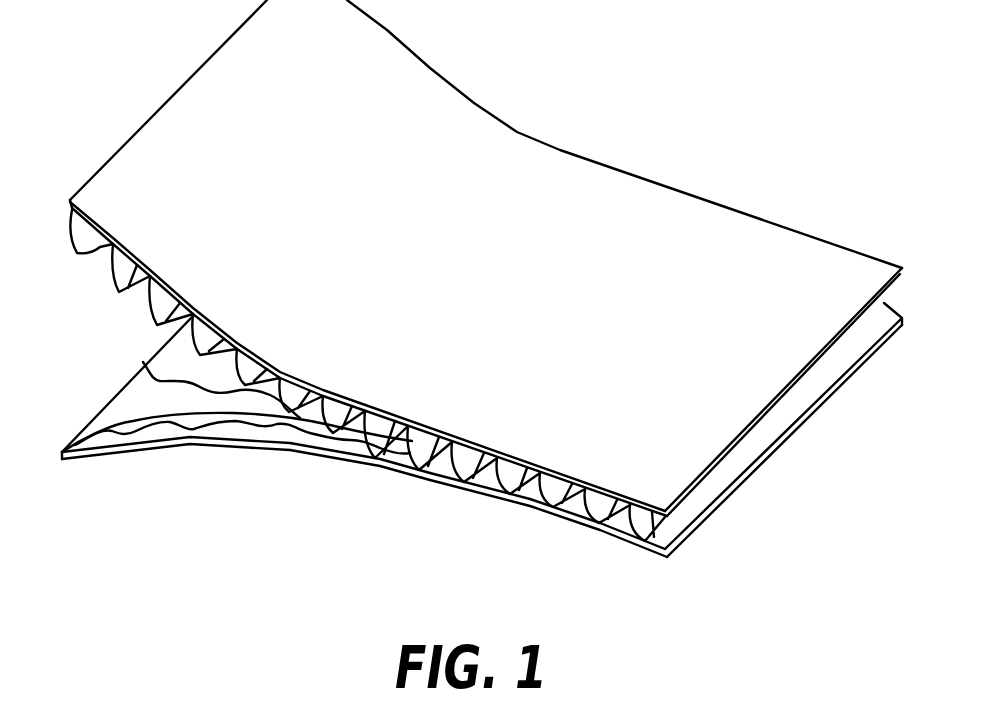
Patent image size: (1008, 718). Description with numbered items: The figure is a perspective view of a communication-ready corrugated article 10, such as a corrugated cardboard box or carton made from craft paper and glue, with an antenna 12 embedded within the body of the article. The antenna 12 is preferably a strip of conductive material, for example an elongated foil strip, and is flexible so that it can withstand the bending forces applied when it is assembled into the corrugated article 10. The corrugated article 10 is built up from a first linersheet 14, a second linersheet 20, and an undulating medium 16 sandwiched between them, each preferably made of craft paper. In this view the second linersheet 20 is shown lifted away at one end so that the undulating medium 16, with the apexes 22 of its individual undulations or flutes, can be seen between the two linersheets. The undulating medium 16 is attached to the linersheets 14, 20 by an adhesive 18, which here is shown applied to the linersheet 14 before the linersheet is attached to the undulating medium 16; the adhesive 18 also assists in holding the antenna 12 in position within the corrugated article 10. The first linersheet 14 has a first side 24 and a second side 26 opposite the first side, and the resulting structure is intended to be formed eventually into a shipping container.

The corrugated article 10 is at (588, 62).
The antenna 12 is at (133, 422).
The first linersheet 14 is at (235, 444).
The undulating medium 16 is at (150, 277).
The adhesive 18 is at (143, 362).
The second linersheet 20 is at (198, 68).
The apexes 22 is at (76, 253).
The first side 24 is at (114, 400).
The second side 26 is at (433, 487).